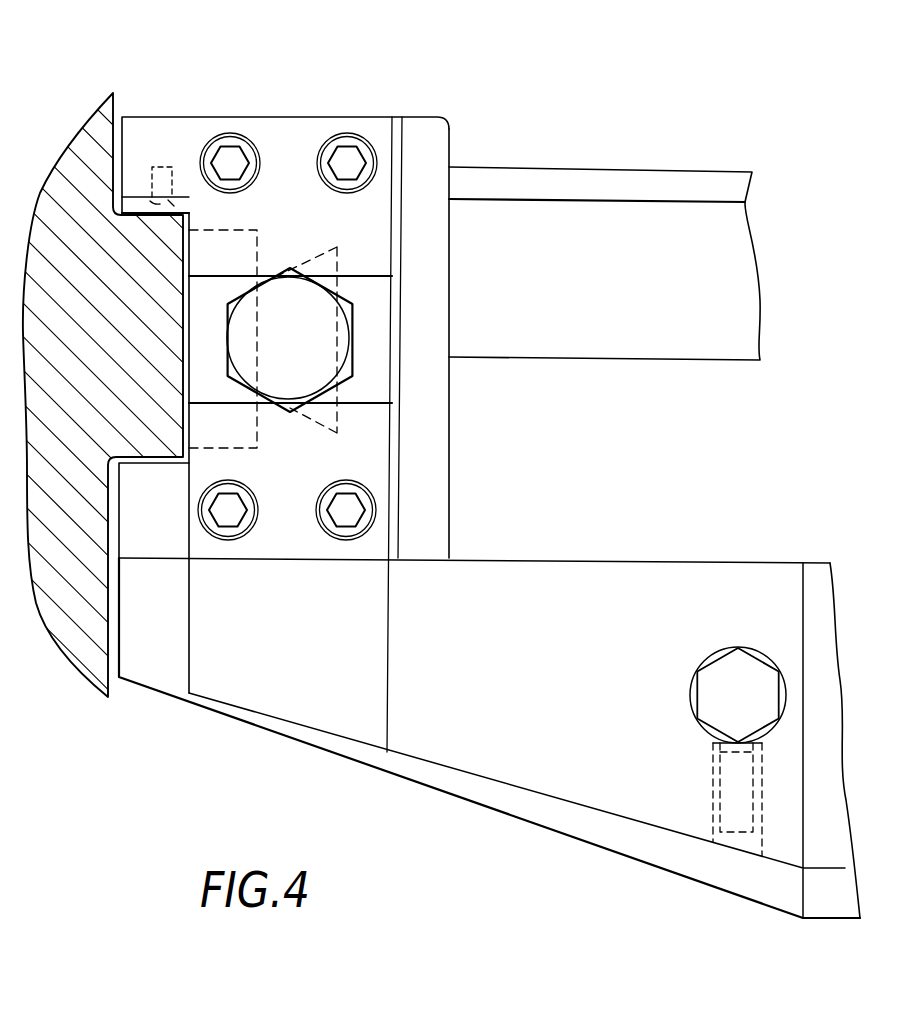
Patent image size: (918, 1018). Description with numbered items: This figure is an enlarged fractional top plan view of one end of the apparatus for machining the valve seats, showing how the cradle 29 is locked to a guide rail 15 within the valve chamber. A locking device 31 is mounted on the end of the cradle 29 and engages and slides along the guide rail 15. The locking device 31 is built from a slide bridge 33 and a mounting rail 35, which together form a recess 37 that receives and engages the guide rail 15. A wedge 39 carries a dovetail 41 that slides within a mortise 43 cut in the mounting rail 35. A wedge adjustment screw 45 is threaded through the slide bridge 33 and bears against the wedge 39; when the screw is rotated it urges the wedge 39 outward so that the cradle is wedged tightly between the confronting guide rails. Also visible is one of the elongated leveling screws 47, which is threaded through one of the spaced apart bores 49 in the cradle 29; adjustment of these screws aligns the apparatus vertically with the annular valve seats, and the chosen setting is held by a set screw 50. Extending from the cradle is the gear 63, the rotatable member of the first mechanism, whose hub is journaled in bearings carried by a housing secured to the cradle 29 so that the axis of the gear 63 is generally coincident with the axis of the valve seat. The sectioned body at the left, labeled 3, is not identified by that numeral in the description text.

The hatched support member 3 is at (83, 141).
The guide rail 15 is at (147, 440).
The cradle 29 is at (562, 572).
The locking device 31 is at (254, 103).
The slide bridge 33 is at (358, 450).
The mounting rail 35 is at (427, 143).
The recess 37 is at (180, 254).
The wedge 39 is at (256, 226).
The dovetail 41 is at (328, 265).
The mortise 43 is at (326, 328).
The wedge adjustment screw 45 is at (358, 366).
The leveling screw 47 is at (740, 662).
The bore 49 is at (697, 672).
The set screw 50 is at (730, 790).
The gear 63 is at (638, 215).